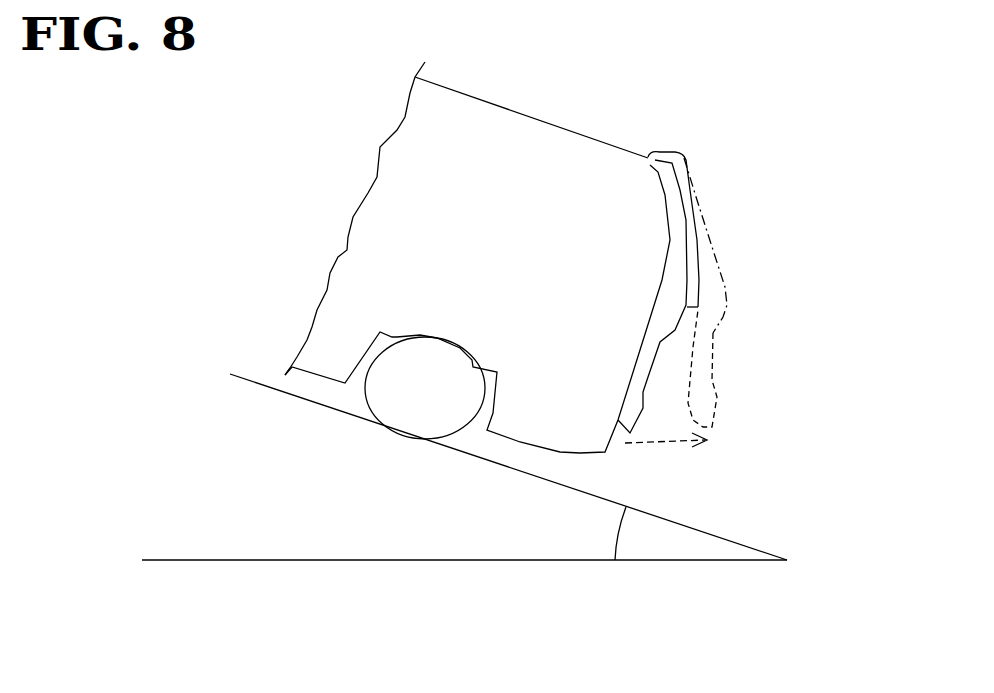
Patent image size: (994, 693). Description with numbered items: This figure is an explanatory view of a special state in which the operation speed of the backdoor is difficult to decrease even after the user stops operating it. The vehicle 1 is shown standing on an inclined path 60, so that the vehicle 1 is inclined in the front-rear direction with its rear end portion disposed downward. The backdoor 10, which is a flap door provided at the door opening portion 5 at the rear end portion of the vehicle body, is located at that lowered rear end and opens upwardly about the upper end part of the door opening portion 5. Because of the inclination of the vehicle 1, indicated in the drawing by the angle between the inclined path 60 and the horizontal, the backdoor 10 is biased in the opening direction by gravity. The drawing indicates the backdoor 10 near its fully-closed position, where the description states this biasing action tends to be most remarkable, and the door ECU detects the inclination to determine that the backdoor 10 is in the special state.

The vehicle 1 is at (548, 121).
The door opening portion 5 is at (655, 330).
The backdoor 10 is at (703, 307).
The inclined path 60 is at (708, 535).